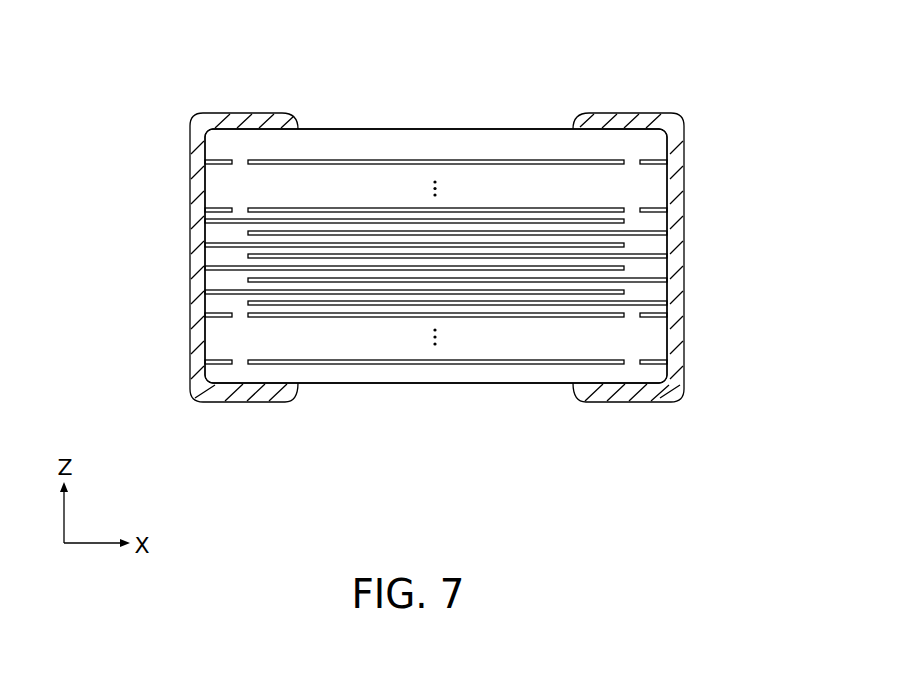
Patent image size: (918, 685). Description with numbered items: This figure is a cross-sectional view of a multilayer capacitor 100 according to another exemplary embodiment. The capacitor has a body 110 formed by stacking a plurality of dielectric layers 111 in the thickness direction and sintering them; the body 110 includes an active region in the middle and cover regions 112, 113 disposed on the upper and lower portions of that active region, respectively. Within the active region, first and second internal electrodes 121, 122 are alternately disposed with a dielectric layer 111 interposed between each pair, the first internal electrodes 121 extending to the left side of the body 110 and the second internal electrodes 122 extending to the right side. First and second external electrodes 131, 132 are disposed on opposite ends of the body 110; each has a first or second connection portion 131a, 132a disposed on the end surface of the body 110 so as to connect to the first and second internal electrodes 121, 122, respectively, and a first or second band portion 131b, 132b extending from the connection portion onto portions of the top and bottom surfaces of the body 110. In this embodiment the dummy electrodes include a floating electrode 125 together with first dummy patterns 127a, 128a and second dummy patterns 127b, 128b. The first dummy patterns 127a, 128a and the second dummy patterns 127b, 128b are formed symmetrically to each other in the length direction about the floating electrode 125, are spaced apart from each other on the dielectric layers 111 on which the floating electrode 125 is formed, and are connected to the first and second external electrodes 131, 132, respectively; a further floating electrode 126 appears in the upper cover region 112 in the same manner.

The multilayer capacitor 100 is at (566, 25).
The body 110 is at (436, 128).
The dielectric layer 111 is at (215, 256).
The cover region 112 is at (184, 130).
The cover region 113 is at (186, 305).
The first internal electrode 121 is at (217, 229).
The second internal electrode 122 is at (647, 279).
The floating electrode 125 is at (440, 366).
The upper floating electrode 126 is at (511, 160).
The first dummy pattern 127a is at (221, 365).
The second dummy pattern 127b is at (650, 365).
The first dummy pattern 128a is at (215, 160).
The second dummy pattern 128b is at (653, 165).
The first external electrode 131 is at (226, 307).
The first connection portion 131a is at (188, 388).
The first band portion 131b is at (242, 285).
The second external electrode 132 is at (644, 307).
The second connection portion 132a is at (677, 354).
The second band portion 132b is at (631, 285).